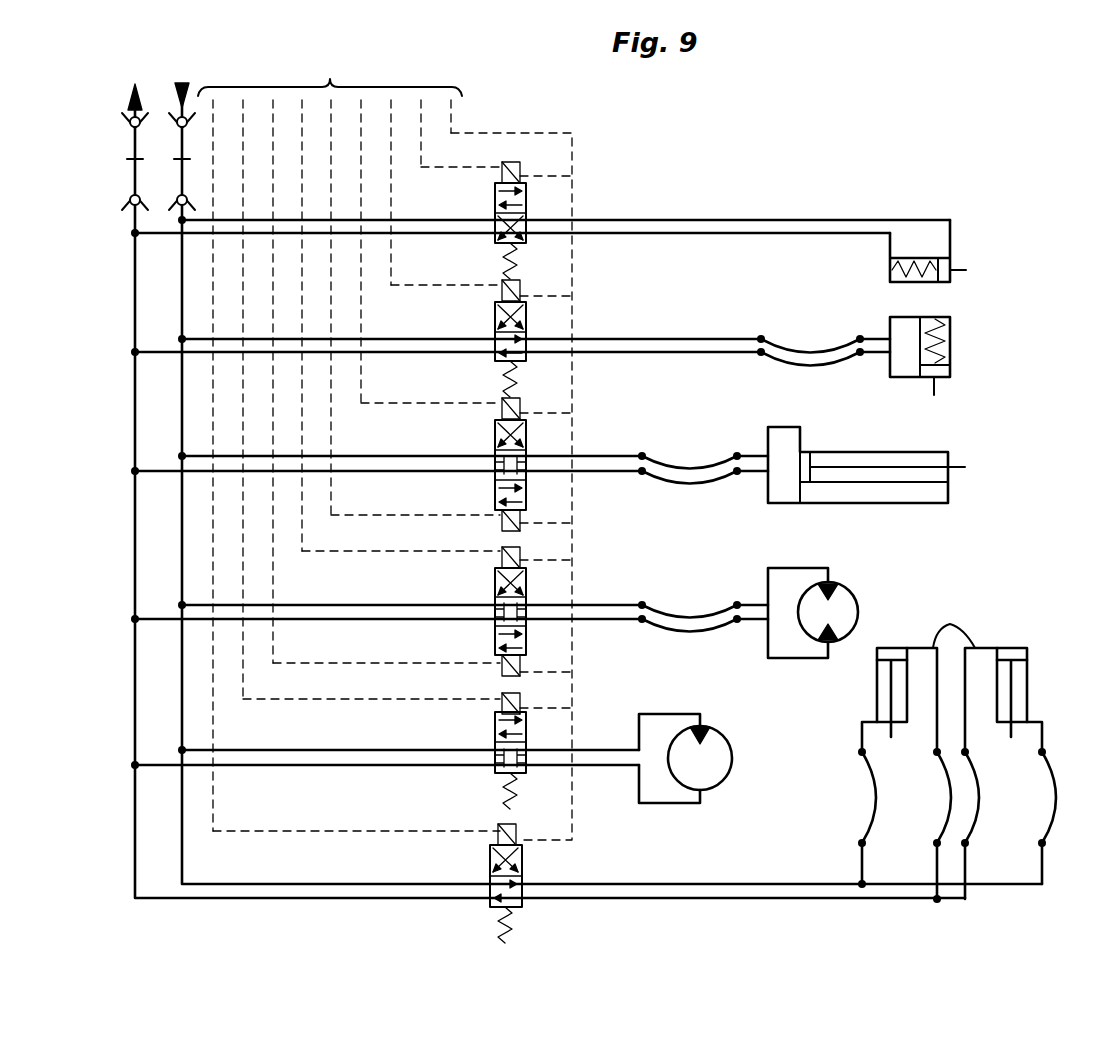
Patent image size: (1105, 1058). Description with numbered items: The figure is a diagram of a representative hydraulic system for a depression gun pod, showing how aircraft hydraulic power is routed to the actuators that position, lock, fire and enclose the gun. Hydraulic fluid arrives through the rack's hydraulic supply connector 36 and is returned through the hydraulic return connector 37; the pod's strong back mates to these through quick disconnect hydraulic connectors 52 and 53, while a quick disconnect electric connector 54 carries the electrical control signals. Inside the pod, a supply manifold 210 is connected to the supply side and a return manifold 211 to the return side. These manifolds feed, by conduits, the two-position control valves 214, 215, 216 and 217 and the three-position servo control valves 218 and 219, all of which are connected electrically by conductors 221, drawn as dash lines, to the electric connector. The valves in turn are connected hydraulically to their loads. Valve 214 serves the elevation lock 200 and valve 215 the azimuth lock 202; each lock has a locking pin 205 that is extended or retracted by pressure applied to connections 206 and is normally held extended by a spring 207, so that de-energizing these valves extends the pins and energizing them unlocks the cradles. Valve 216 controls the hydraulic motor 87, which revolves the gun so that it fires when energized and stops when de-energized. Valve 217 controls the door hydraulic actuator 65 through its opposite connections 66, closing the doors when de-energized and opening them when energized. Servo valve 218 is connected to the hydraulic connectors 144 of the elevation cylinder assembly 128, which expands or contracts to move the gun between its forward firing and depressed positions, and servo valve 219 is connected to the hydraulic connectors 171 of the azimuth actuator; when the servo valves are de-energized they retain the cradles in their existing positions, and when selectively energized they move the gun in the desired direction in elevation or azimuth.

The hydraulic supply connector 36 is at (180, 148).
The hydraulic return connector 37 is at (132, 145).
The quick disconnect hydraulic connector 52 is at (178, 184).
The quick disconnect hydraulic connector 53 is at (128, 182).
The quick disconnect electric connector 54 is at (330, 444).
The hydraulic actuator 65 is at (952, 674).
The connections 66 is at (872, 800).
The hydraulic motor 87 is at (716, 734).
The elevation cylinder assembly 128 is at (856, 452).
The hydraulic connectors 144 is at (730, 461).
The hydraulic connectors 171 is at (708, 628).
The elevation lock 200 is at (911, 310).
The azimuth lock 202 is at (888, 319).
The locking pin 205 is at (964, 270).
The connections 206 is at (881, 232).
The springs 207 is at (930, 280).
The supply manifold 210 is at (182, 701).
The return manifold 211 is at (134, 664).
The two-position control valve 214 is at (495, 242).
The two-position control valve 215 is at (495, 358).
The two-position control valve 216 is at (491, 770).
The two-position control valve 217 is at (488, 858).
The three-position servo control valve 218 is at (495, 484).
The three-position servo control valve 219 is at (493, 586).
The conductors 221 is at (460, 163).